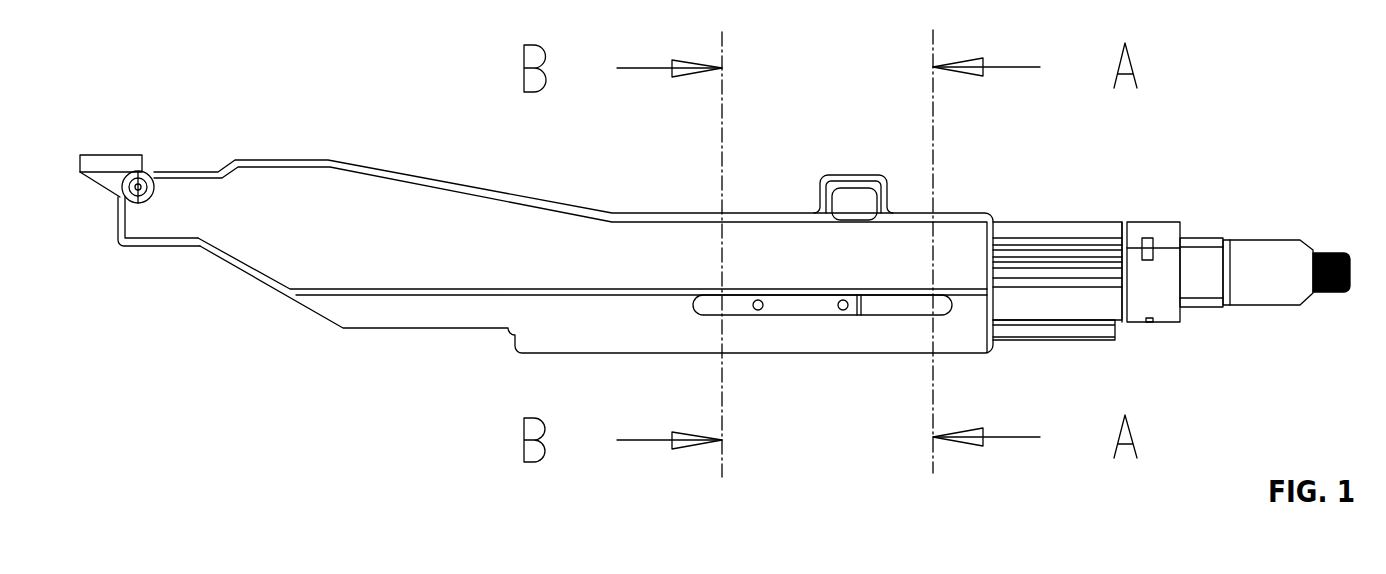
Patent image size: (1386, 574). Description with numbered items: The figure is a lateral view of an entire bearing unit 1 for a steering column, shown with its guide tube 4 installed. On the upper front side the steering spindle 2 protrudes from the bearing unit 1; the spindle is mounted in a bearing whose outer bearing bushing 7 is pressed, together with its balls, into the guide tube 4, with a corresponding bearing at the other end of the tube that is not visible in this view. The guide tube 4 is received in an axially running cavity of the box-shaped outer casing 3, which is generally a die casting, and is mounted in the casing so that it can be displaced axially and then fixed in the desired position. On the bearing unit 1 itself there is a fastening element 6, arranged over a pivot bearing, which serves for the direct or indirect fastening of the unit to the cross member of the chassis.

The bearing unit 1 is at (385, 417).
The steering spindle 2 is at (1255, 250).
The box-shaped outer casing 3 is at (575, 233).
The guide tube 4 is at (1063, 232).
The fastening element 6 is at (110, 162).
The bearing bushing 7 is at (1168, 232).